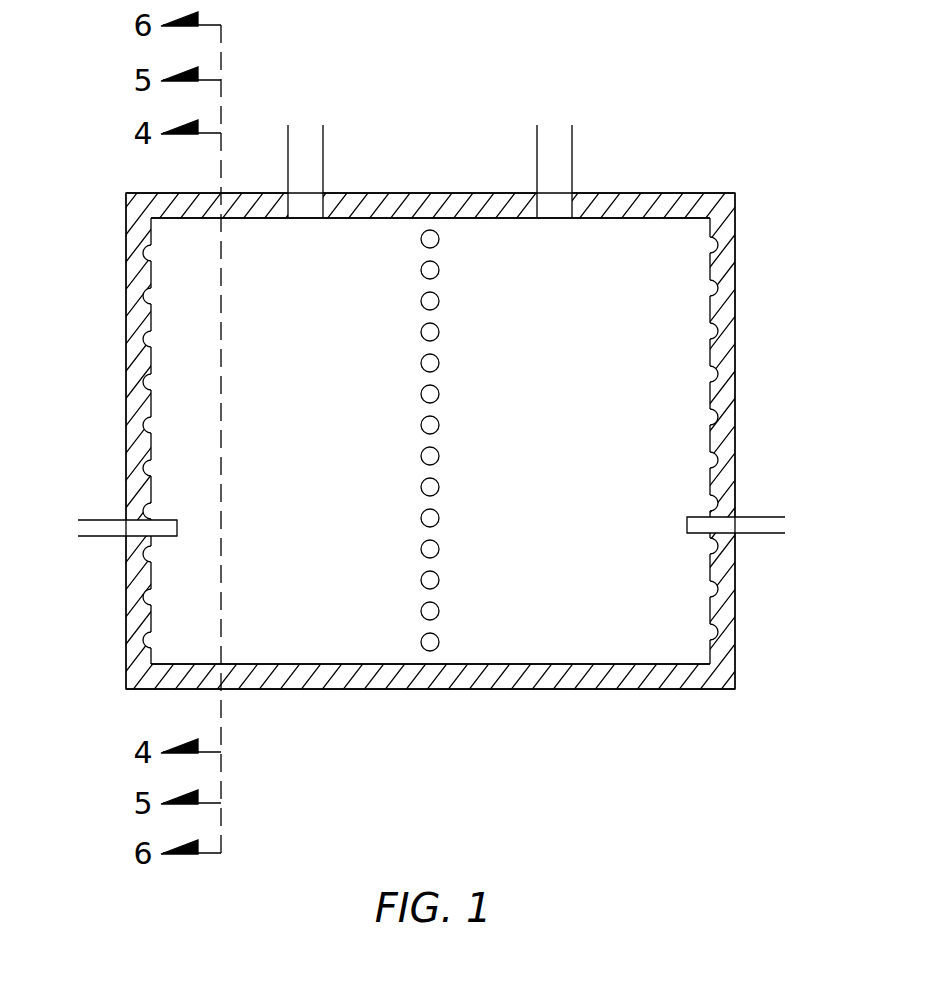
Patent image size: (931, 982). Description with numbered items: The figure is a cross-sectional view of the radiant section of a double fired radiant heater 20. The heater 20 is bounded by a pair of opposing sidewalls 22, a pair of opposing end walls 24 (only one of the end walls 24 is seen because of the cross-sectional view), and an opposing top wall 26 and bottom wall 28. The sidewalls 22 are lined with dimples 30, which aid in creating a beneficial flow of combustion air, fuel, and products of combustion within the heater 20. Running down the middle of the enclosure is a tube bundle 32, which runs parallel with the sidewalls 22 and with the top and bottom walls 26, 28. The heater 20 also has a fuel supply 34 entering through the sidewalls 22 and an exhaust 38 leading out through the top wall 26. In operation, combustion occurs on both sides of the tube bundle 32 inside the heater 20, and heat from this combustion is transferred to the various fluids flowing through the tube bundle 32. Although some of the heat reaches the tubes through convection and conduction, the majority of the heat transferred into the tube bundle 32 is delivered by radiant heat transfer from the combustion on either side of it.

The radiant heater 20 is at (726, 133).
The sidewalls 22 is at (126, 360).
The end walls 24 is at (658, 597).
The top wall 26 is at (446, 193).
The bottom wall 28 is at (378, 688).
The dimples 30 is at (148, 460).
The tube bundle 32 is at (439, 615).
The fuel supply 34 is at (106, 528).
The exhaust 38 is at (302, 140).